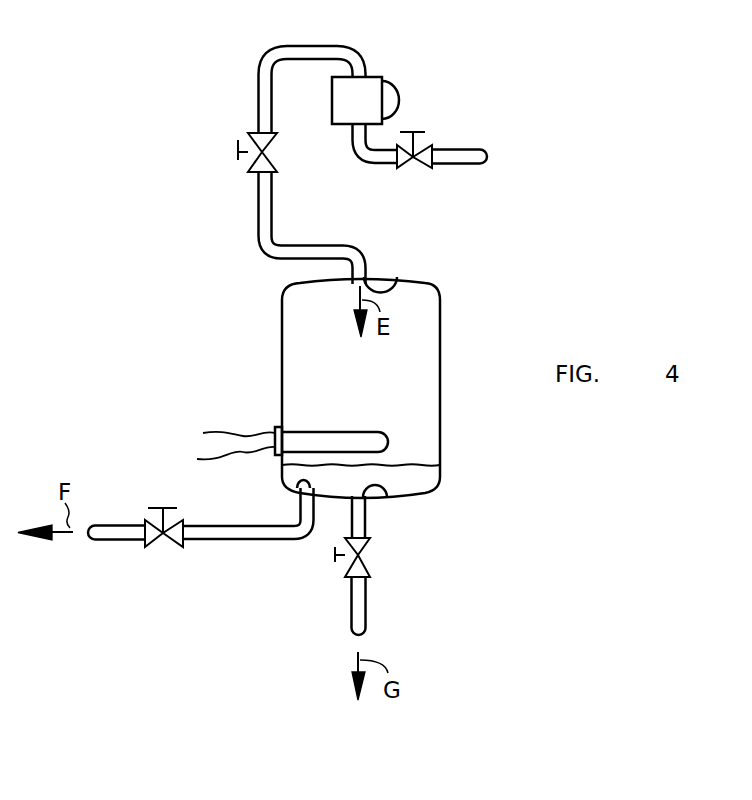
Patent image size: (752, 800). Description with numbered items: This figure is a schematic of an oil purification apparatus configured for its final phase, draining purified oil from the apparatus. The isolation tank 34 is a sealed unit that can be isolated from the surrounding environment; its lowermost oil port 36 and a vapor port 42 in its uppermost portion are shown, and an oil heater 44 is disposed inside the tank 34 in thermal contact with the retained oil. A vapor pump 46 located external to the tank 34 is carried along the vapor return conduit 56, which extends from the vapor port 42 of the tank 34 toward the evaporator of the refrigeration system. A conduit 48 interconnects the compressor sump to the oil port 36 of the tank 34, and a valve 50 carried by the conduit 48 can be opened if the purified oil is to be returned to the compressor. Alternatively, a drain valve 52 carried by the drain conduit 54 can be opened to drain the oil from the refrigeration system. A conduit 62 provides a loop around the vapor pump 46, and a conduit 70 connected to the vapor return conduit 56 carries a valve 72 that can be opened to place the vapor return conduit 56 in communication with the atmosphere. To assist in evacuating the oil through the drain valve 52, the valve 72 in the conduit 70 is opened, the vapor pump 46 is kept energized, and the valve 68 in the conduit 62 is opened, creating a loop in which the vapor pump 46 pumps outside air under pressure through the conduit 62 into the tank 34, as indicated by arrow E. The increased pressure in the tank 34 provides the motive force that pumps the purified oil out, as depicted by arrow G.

The isolation tank 34 is at (294, 364).
The oil port 36 is at (300, 482).
The vapor port 42 is at (394, 281).
The oil heater 44 is at (328, 430).
The vapor pump 46 is at (400, 97).
The conduit 48 is at (124, 541).
The valve 50 is at (165, 547).
The drain valve 52 is at (335, 560).
The drain conduit 54 is at (366, 607).
The vapor return conduit 56 is at (358, 73).
The conduit 62 is at (258, 72).
The valve 68 is at (238, 152).
The conduit 70 is at (454, 150).
The valve 72 is at (420, 170).